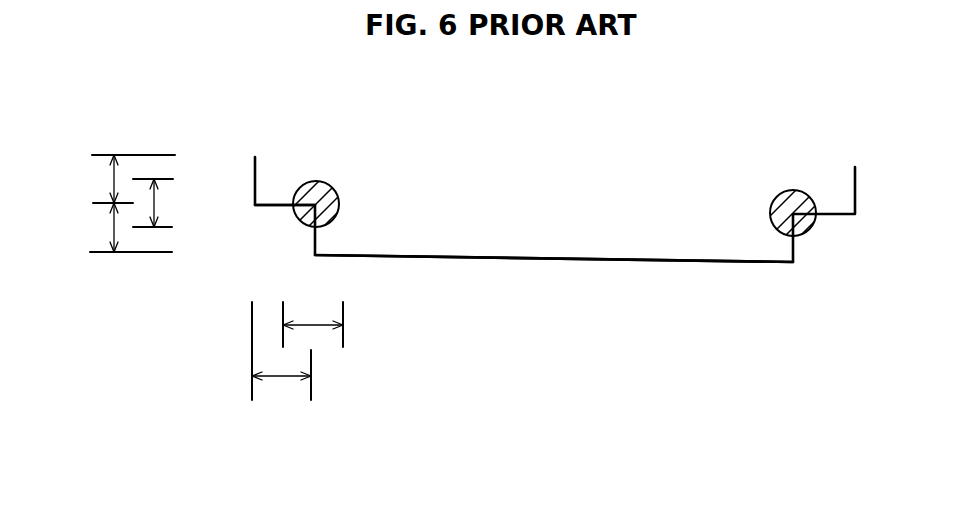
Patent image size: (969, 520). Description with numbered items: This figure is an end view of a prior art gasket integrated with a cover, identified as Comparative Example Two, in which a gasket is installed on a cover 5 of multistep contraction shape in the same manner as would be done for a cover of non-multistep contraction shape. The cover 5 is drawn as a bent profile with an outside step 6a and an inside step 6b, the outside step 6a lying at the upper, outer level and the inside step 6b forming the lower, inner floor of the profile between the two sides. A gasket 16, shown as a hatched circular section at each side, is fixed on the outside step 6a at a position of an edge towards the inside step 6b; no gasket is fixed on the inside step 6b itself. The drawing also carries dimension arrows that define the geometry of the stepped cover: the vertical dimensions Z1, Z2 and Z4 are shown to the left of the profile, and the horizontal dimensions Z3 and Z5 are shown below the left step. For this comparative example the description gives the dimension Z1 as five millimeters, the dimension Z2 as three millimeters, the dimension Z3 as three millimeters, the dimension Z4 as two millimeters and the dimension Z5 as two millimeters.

The cover 5 is at (555, 256).
The outside step 6a is at (273, 204).
The inside step 6b is at (345, 254).
The gasket 16 is at (320, 197).
The dimension Z1 is at (112, 179).
The dimension Z2 is at (112, 229).
The dimension Z3 is at (278, 379).
The dimension Z4 is at (156, 205).
The dimension Z5 is at (316, 325).